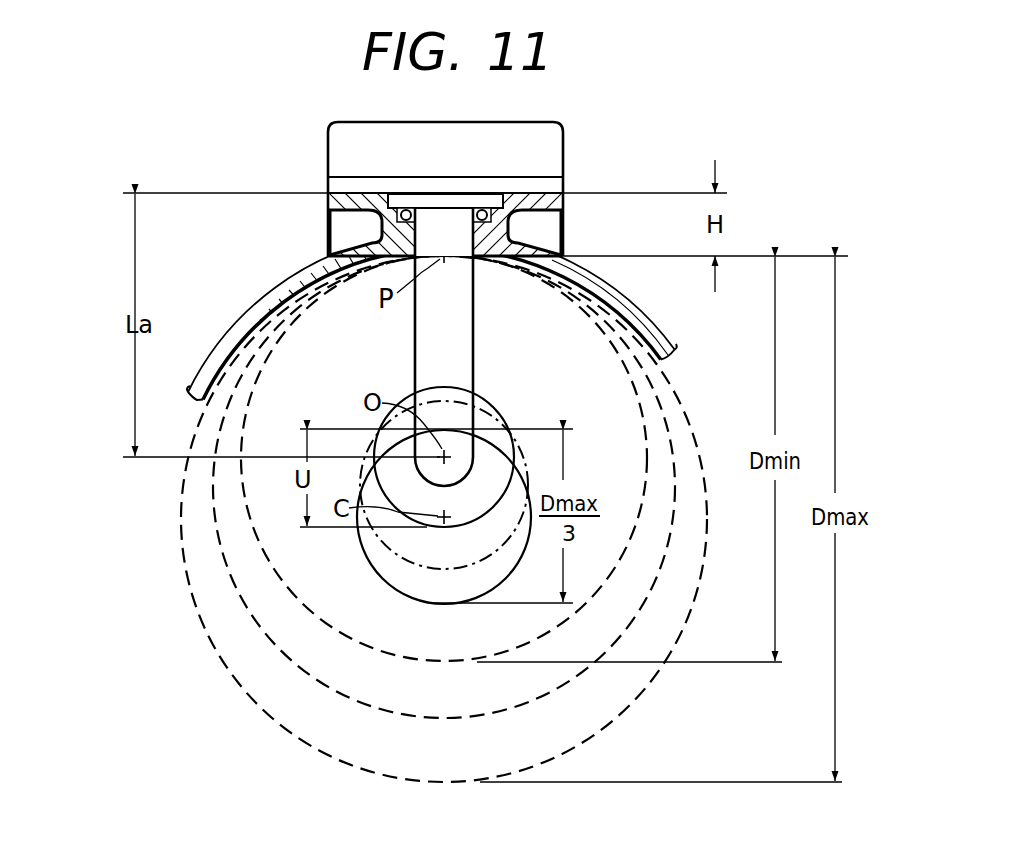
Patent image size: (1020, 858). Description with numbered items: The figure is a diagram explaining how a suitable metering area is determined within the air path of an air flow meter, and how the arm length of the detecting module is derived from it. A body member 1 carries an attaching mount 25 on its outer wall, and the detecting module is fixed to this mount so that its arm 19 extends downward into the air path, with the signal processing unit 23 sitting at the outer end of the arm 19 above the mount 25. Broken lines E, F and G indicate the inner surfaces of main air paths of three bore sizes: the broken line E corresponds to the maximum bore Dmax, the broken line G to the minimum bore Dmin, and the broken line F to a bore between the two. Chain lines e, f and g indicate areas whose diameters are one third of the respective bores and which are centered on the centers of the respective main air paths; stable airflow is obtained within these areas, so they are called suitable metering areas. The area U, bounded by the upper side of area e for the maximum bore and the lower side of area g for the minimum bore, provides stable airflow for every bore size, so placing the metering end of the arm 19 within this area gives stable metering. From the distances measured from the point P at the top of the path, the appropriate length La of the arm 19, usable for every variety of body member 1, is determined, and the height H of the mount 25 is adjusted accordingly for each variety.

The body member 1 is at (302, 292).
The arm 19 is at (474, 339).
The signal processing unit 23 is at (559, 126).
The attaching mount 25 is at (560, 204).
The broken line E is at (320, 749).
The broken line F is at (367, 709).
The broken line G is at (427, 664).
The suitable metering area e is at (513, 578).
The suitable metering area f is at (433, 563).
The suitable metering area g is at (500, 404).